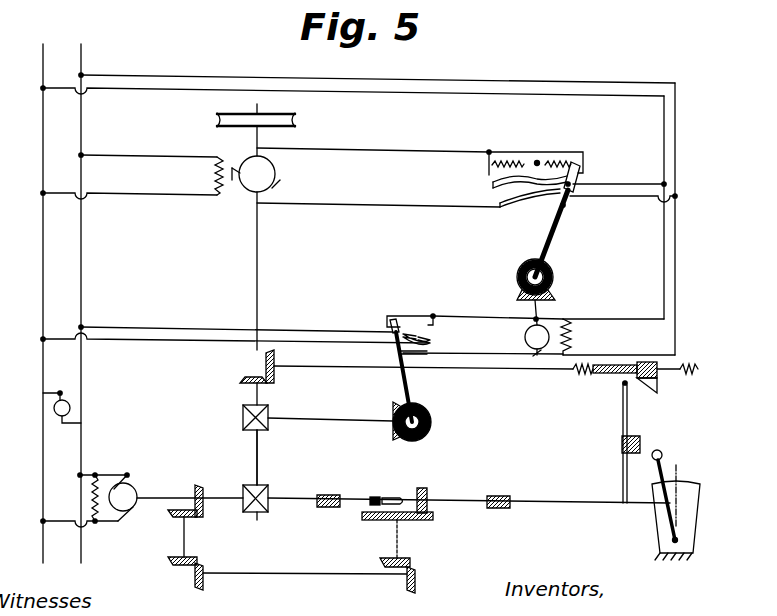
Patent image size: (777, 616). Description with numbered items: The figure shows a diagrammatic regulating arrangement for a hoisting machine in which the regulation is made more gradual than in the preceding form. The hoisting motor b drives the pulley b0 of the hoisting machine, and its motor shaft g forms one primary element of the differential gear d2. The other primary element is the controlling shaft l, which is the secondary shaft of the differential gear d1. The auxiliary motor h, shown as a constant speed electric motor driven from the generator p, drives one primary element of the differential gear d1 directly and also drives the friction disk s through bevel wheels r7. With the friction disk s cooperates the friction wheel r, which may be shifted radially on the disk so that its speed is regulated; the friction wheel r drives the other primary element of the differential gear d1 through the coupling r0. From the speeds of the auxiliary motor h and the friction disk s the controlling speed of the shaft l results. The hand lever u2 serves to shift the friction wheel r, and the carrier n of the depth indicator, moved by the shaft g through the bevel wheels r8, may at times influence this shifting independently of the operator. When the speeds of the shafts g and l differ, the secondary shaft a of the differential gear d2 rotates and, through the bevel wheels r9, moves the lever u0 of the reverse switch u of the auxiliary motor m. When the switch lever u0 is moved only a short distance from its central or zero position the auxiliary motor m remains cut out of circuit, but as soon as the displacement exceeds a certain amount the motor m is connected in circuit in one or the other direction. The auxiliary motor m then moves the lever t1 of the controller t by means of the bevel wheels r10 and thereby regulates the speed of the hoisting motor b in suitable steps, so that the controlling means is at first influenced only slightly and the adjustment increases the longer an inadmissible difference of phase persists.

The pulley b0 is at (296, 121).
The hoisting motor b is at (262, 176).
The motor shaft g is at (259, 268).
The controller t is at (535, 204).
The controller lever t1 is at (561, 219).
The bevel wheels r10 is at (554, 284).
The auxiliary motor m is at (525, 338).
The reverse switch u is at (411, 318).
The switch lever u0 is at (401, 380).
The bevel wheels r9 is at (411, 440).
The secondary shaft a is at (320, 419).
The bevel wheels r8 is at (277, 378).
The differential gear d2 is at (241, 418).
The controlling shaft l is at (260, 457).
The generator p is at (70, 406).
The auxiliary motor h is at (120, 504).
The bevel wheels r7 is at (200, 518).
The differential gear d1 is at (251, 513).
The coupling r0 is at (380, 496).
The friction wheel r is at (422, 489).
The friction disk s is at (418, 521).
The carrier n is at (635, 432).
The hand lever u2 is at (670, 520).